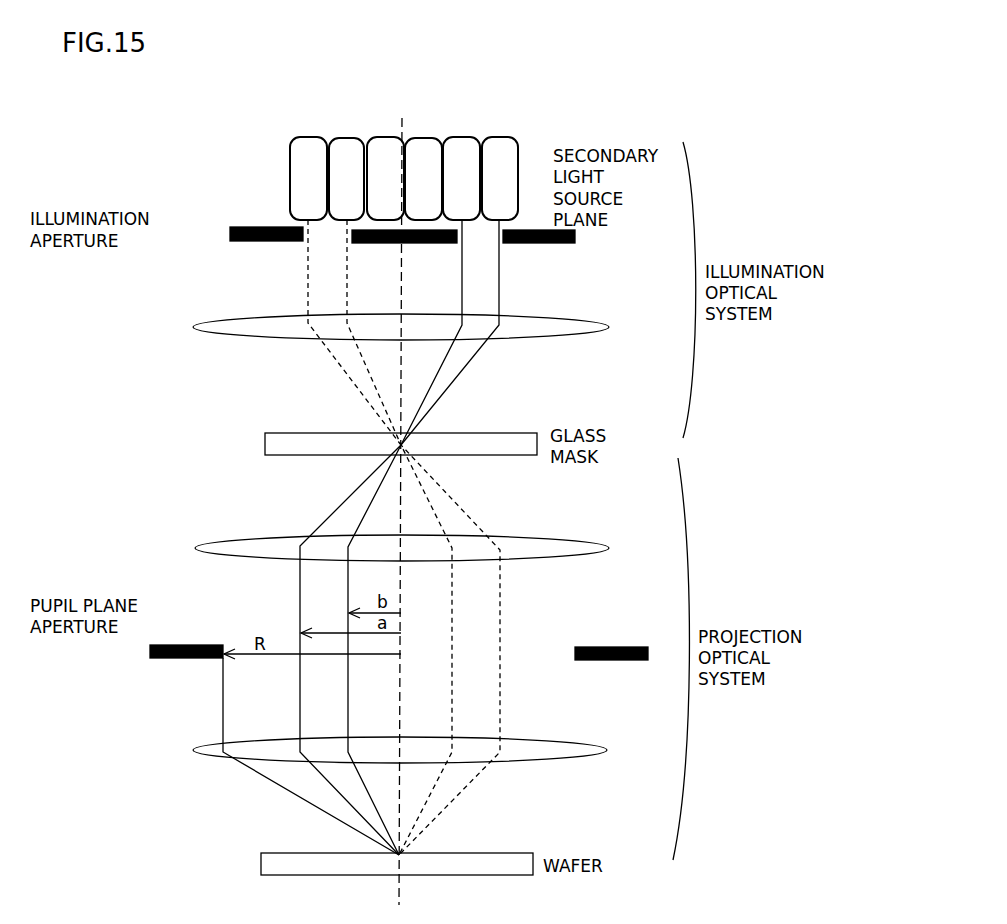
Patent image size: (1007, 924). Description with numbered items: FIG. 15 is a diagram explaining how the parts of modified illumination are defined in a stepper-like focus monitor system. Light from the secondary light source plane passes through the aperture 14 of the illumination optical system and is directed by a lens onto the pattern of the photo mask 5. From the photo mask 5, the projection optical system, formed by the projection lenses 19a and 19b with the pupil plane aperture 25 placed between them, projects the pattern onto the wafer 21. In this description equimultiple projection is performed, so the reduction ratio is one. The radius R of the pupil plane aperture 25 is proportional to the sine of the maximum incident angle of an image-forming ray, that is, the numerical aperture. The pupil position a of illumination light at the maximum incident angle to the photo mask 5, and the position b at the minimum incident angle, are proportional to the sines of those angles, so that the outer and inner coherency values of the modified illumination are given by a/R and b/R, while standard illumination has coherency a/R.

The aperture 14 is at (230, 233).
The photo mask 5 is at (280, 445).
The projection lens 19a is at (200, 548).
The pupil plane aperture 25 is at (172, 660).
The projection lens 19b is at (200, 750).
The wafer 21 is at (275, 865).